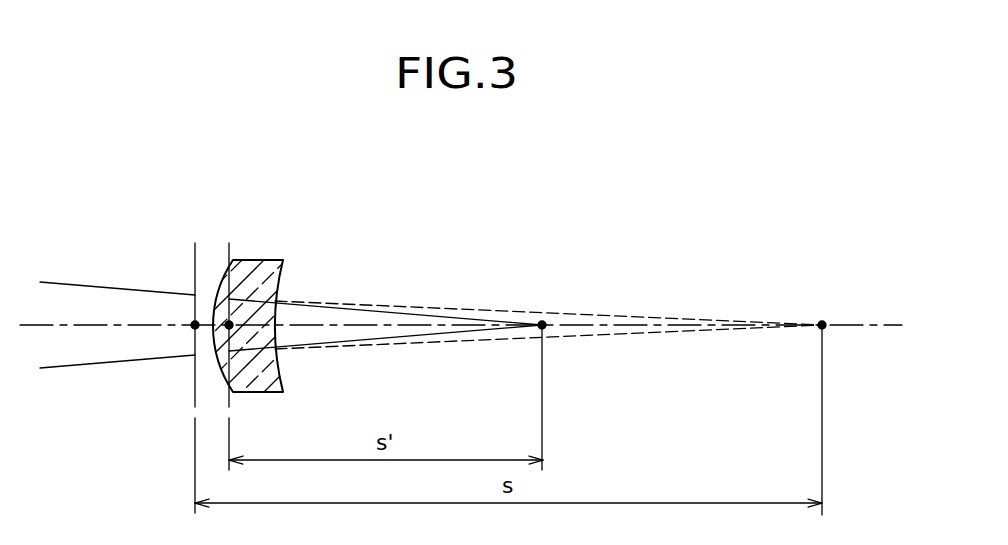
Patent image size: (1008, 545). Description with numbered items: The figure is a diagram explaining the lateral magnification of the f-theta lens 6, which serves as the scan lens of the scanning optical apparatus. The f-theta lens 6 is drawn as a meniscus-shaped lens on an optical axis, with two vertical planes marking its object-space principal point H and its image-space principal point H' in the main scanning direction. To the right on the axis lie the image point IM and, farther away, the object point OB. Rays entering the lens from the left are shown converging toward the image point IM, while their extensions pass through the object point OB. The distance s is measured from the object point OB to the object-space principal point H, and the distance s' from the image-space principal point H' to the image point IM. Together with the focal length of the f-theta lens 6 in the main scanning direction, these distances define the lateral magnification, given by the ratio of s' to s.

The f-theta lens 6 is at (258, 260).
The object-space principal point H is at (175, 378).
The image-space principal point H' is at (217, 356).
The image point IM is at (543, 322).
The object point OB is at (823, 322).